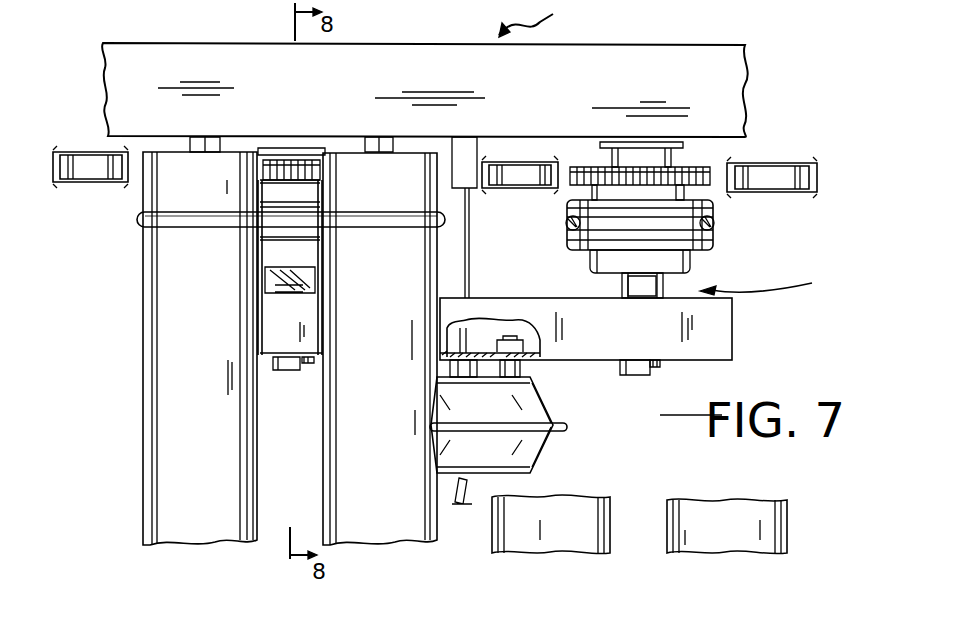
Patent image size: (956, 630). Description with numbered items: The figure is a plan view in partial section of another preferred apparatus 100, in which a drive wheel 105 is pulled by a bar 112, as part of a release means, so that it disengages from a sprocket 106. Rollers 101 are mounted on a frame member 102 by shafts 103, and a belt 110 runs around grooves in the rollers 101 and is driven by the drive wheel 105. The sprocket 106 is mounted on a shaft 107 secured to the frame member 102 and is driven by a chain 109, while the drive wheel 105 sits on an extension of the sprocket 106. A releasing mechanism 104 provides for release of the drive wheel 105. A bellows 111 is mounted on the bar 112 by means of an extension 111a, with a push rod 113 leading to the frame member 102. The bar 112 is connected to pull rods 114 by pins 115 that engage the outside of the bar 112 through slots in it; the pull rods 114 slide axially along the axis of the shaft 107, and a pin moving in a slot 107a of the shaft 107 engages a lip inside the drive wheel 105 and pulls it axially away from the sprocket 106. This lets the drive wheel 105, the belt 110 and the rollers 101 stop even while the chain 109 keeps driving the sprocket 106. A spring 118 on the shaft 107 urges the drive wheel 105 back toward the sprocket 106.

The apparatus 100 is at (549, 20).
The rollers 101 is at (170, 352).
The frame member 102 is at (648, 70).
The shafts 103 is at (212, 146).
The releasing mechanism 104 is at (778, 283).
The drive wheel 105 is at (257, 232).
The sprocket 106 is at (297, 170).
The shaft 107 is at (700, 281).
The slot 107a is at (700, 257).
The chain 109 is at (80, 185).
The belt 110 is at (157, 228).
The bellows 111 is at (547, 456).
The extension 111a is at (527, 370).
The bar 112 is at (275, 334).
The push rod 113 is at (470, 265).
The pull rods 114 is at (290, 372).
The pins 115 is at (313, 368).
The spring 118 is at (620, 278).